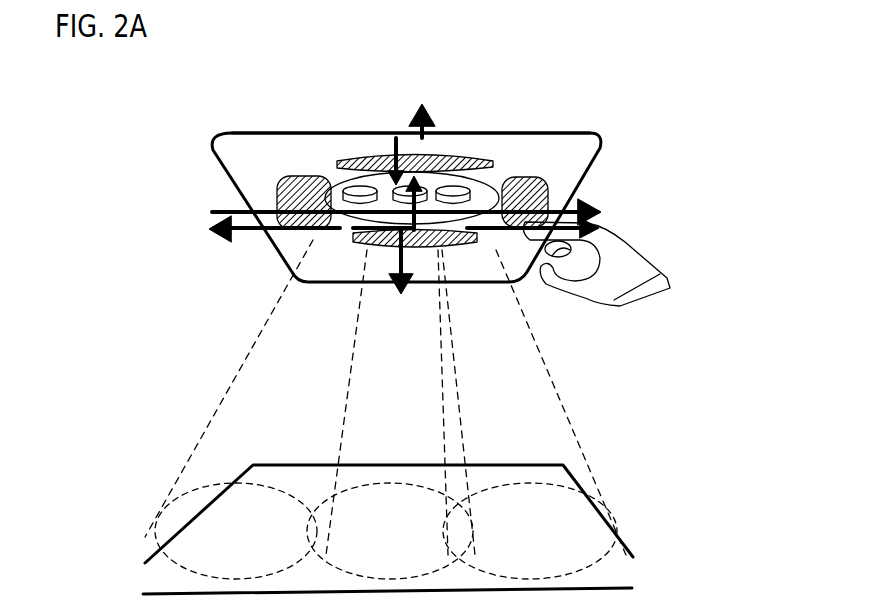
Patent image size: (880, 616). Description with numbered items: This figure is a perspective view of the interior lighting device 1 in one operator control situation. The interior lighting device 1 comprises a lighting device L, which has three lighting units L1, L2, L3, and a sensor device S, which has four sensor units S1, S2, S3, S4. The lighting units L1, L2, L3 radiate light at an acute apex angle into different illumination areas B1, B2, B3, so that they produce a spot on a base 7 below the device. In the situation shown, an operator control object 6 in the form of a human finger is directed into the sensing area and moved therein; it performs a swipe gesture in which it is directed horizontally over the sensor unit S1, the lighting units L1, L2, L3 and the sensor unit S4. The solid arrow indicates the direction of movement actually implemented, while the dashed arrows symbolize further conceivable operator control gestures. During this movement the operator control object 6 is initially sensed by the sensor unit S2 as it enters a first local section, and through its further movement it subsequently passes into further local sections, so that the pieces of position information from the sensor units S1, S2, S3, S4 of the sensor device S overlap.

The interior lighting device 1 is at (573, 133).
The sensor device S is at (336, 153).
The lighting device L is at (340, 226).
The lighting unit L1 is at (357, 190).
The lighting unit L2 is at (399, 194).
The lighting unit L3 is at (456, 190).
The sensor unit S1 is at (278, 181).
The sensor unit S2 is at (449, 157).
The sensor unit S3 is at (384, 238).
The sensor unit S4 is at (547, 190).
The operator control object 6 is at (633, 248).
The illumination area B1 is at (230, 383).
The illumination area B2 is at (457, 417).
The illumination area B3 is at (561, 398).
The base 7 is at (612, 588).